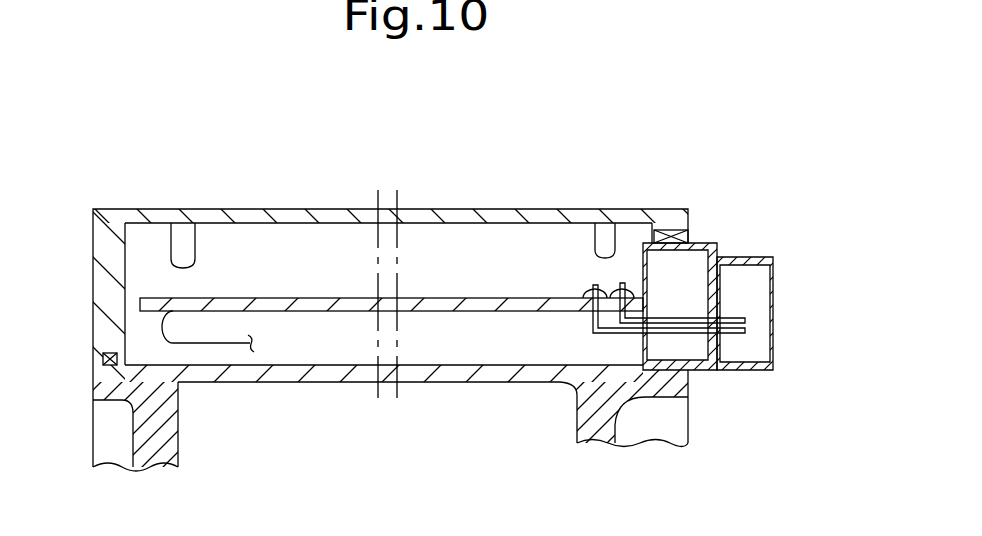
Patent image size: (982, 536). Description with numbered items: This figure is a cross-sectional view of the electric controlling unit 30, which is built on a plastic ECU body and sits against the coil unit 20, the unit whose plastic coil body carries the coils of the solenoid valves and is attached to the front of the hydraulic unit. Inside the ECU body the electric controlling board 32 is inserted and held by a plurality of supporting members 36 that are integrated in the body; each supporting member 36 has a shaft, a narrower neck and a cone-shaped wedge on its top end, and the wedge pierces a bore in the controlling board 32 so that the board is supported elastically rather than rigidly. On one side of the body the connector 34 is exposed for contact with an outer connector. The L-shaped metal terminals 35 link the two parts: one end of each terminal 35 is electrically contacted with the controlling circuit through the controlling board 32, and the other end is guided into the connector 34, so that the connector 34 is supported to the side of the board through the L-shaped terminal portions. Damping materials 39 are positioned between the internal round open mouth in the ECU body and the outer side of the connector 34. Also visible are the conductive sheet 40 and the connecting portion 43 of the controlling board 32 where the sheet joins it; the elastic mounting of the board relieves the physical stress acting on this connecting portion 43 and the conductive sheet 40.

The coil unit 20 is at (690, 404).
The electric controlling unit 30 is at (689, 210).
The electric controlling board 32 is at (310, 297).
The connector 34 is at (753, 257).
The terminal 35 is at (735, 312).
The supporting member 36 is at (170, 240).
The damping materials 39 is at (695, 228).
The conductive sheet 40 is at (230, 343).
The connecting portion 43 is at (167, 313).